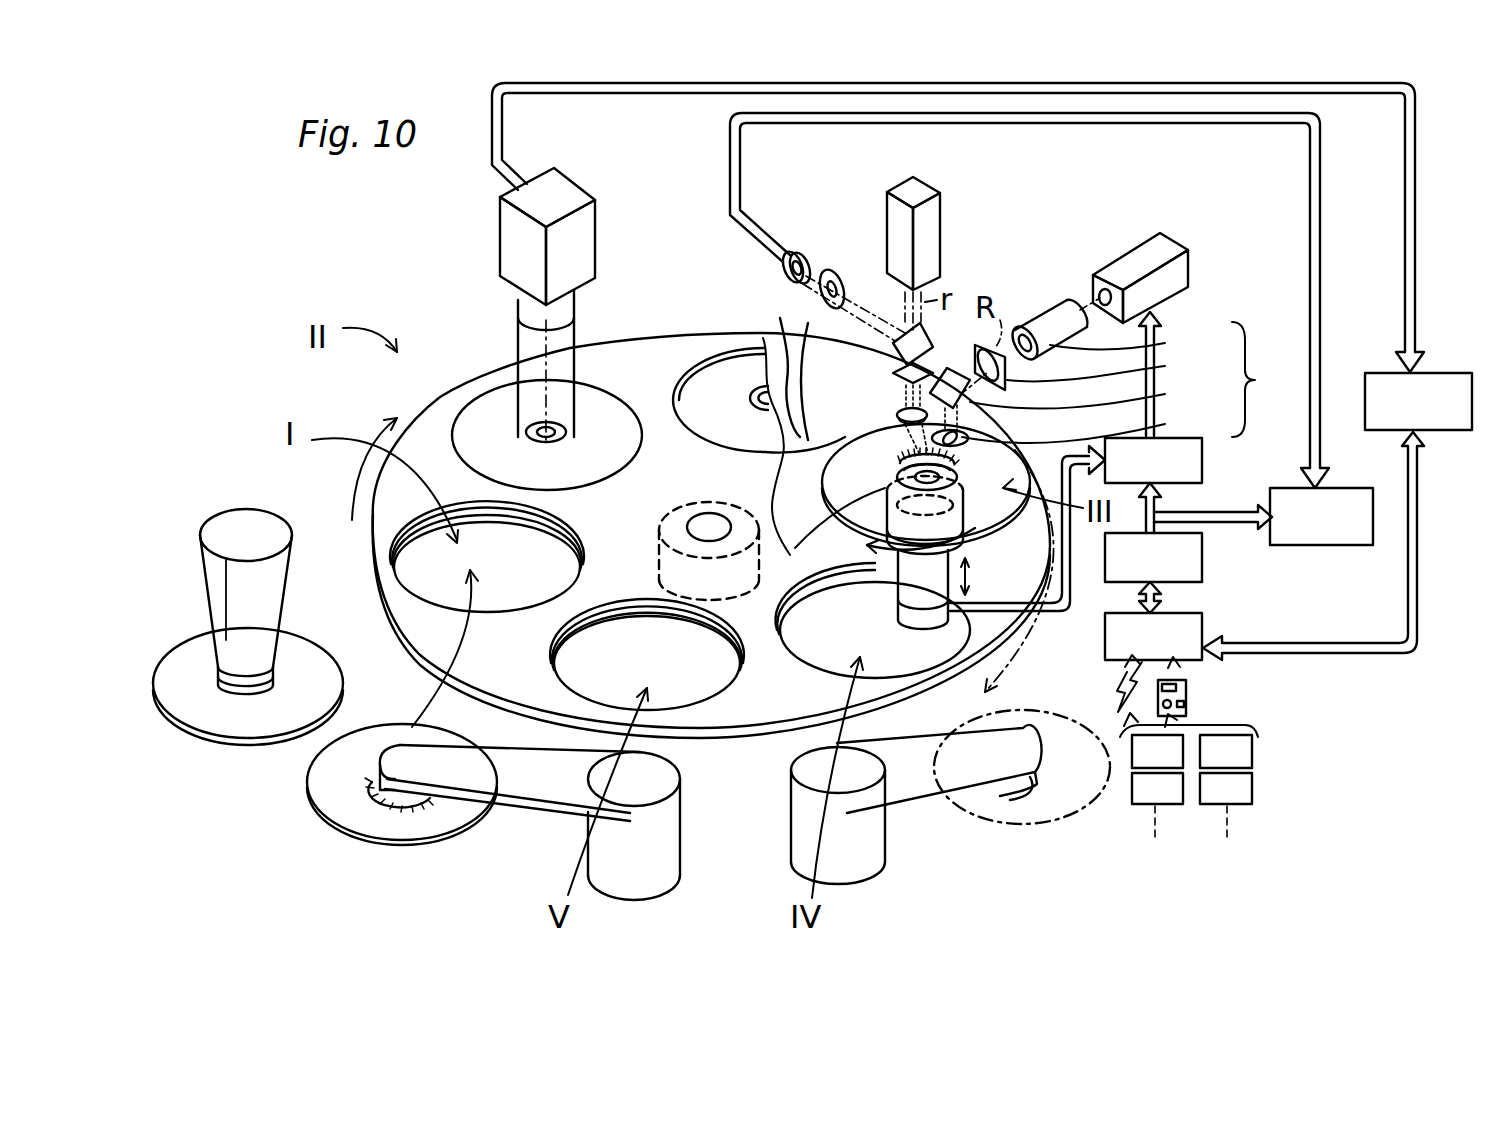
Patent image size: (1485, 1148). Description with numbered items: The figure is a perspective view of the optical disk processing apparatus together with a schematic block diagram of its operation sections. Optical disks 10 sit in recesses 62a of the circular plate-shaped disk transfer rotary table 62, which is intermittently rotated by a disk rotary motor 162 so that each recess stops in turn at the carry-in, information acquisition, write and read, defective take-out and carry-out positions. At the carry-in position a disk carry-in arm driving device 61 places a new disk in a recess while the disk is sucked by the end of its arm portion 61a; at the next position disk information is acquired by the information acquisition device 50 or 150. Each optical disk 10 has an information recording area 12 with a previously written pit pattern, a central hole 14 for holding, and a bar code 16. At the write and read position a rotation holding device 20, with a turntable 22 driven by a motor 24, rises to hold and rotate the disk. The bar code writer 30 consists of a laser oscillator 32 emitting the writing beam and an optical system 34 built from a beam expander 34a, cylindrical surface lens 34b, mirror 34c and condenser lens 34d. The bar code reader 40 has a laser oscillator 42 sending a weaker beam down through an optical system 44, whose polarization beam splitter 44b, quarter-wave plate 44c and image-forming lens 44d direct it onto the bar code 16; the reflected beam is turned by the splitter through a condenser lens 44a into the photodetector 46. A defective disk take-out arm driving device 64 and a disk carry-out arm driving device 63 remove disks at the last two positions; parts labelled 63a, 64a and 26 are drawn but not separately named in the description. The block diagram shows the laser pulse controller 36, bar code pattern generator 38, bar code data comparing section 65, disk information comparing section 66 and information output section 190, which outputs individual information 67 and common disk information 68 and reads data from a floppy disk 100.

The optical disk 10 is at (493, 423).
The information recording area 12 is at (845, 468).
The hole 14 is at (825, 533).
The bar code 16 is at (912, 466).
The rotation holding device 20 is at (887, 552).
The turntable 22 is at (960, 548).
The motor 24 is at (900, 585).
The transfer path 26 is at (935, 615).
The bar code writer 30 is at (1038, 305).
The laser oscillator 32 is at (1125, 265).
The optical system 34 is at (1218, 374).
The beam expander 34a is at (1140, 335).
The cylindrical surface lens 34b is at (1119, 365).
The mirror 34c is at (1099, 395).
The condenser lens 34d is at (1097, 423).
The laser pulse controller 36 is at (1177, 479).
The bar code pattern generator 38 is at (1177, 576).
The bar code reader 40 is at (950, 227).
The laser oscillator 42 is at (890, 215).
The optical system 44 is at (771, 362).
The condenser lens 44a is at (893, 343).
The polarization beam splitter 44b is at (893, 373).
The λ/4 plate 44c is at (930, 392).
The image-forming lens 44d is at (898, 418).
The photodetector 46 is at (789, 253).
The information acquisition device 50 is at (592, 220).
The information acquisition device 150 is at (601, 321).
The disk carry-in arm driving device 61 is at (270, 512).
The arm portion 61a is at (255, 612).
The disk transfer rotary table 62 is at (447, 412).
The recesses 62a is at (677, 393).
The disk carry-out arm driving device 63 is at (680, 815).
The transfer arm 63a is at (523, 782).
The defective disk take-out arm driving device 64 is at (792, 805).
The unloading arm 64a is at (917, 780).
The bar code data comparing section 65 is at (1346, 536).
The disk information comparing section 66 is at (1442, 421).
The individual information 67 is at (1157, 787).
The disk information (common information) 68 is at (1226, 787).
The floppy disk 100 is at (1190, 702).
The disk rotary motor 162 is at (673, 535).
The information output section 190 is at (1185, 655).